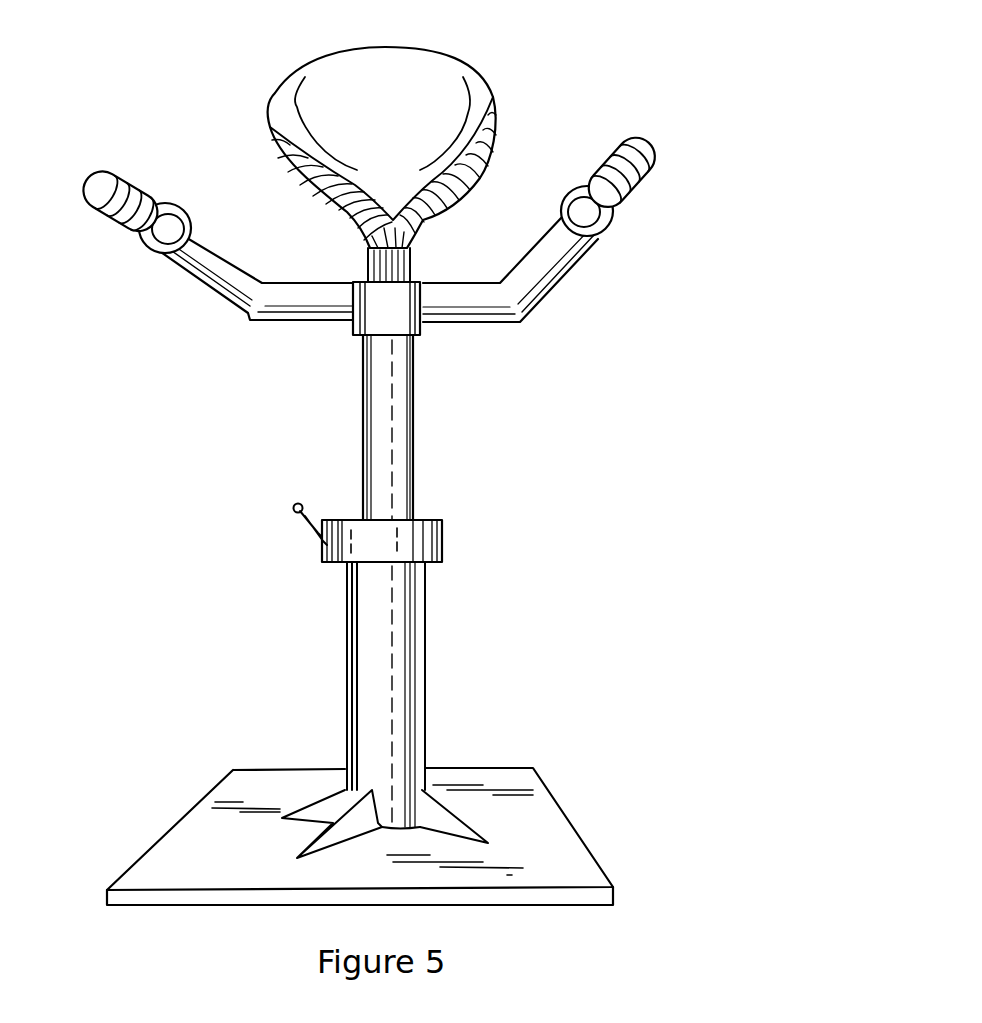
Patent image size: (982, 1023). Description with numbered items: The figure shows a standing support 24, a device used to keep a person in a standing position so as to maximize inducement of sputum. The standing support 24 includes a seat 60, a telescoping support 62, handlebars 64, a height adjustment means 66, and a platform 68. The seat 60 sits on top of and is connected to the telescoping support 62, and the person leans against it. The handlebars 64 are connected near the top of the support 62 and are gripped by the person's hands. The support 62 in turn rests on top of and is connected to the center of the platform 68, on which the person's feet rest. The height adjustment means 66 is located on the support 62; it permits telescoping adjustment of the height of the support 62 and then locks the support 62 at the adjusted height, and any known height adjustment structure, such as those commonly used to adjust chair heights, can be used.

The standing support 24 is at (622, 495).
The seat 60 is at (430, 78).
The telescoping support 62 is at (416, 408).
The handlebars 64 is at (195, 263).
The height adjustment means 66 is at (300, 532).
The platform 68 is at (545, 835).